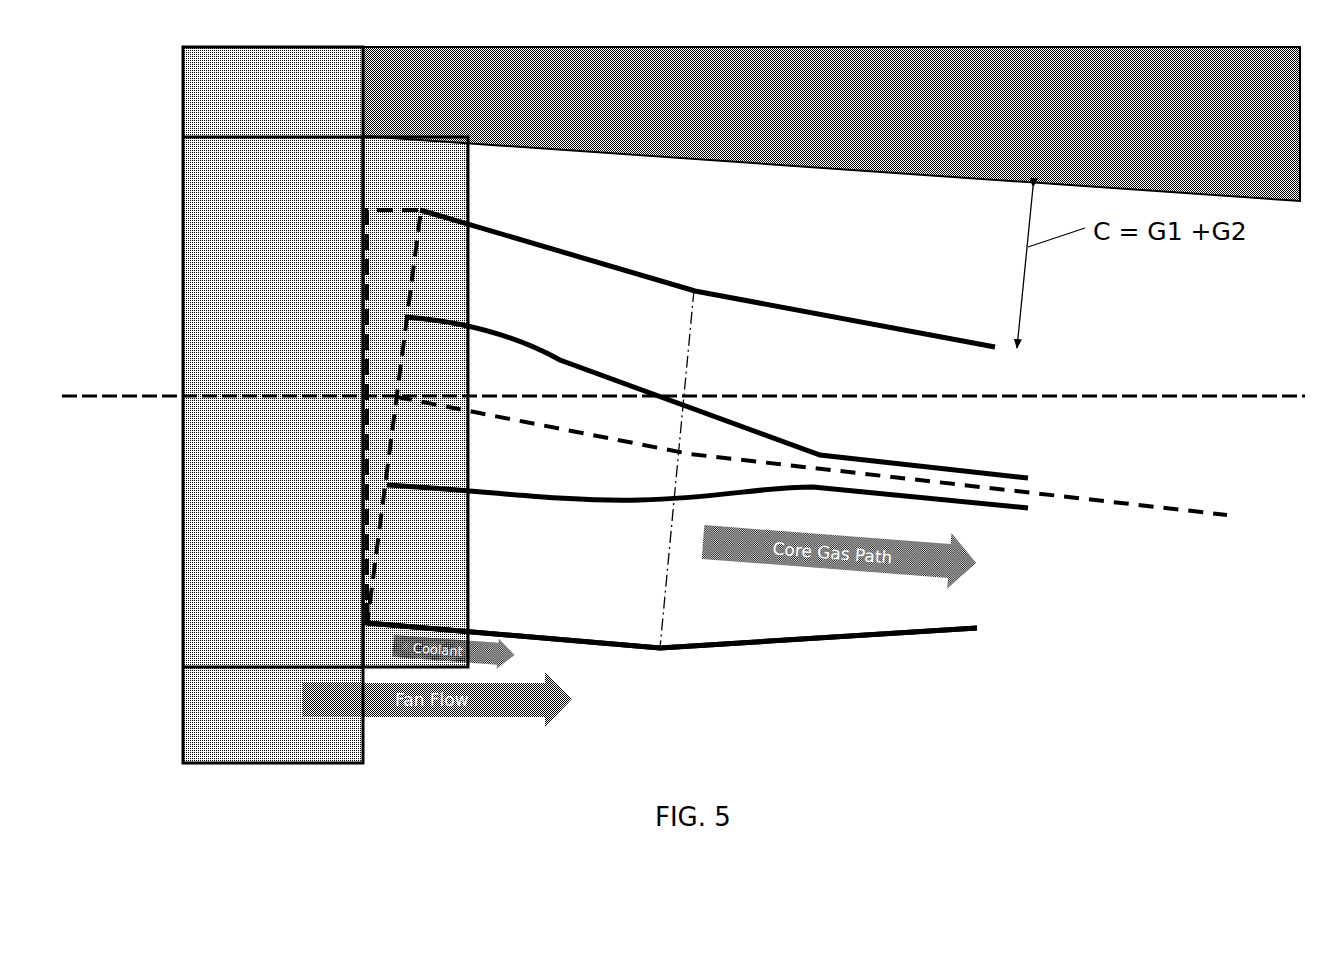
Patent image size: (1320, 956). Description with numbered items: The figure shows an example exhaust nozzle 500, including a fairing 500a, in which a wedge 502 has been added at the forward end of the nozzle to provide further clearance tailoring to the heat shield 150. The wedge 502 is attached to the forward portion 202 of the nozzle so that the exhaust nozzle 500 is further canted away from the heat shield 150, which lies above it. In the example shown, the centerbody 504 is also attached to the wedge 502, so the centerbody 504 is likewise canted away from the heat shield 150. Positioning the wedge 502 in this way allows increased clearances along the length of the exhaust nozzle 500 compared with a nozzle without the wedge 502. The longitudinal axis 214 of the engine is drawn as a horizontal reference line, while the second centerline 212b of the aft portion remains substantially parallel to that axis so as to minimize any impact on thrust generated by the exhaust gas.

The heat shield 150 is at (831, 124).
The forward portion 202 is at (657, 276).
The longitudinal axis 214 is at (1223, 395).
The second centerline 212b is at (1190, 512).
The wedge 502 is at (393, 260).
The centerbody 504 is at (549, 332).
The exhaust nozzle 500 is at (932, 640).
The fairing 500a is at (672, 635).